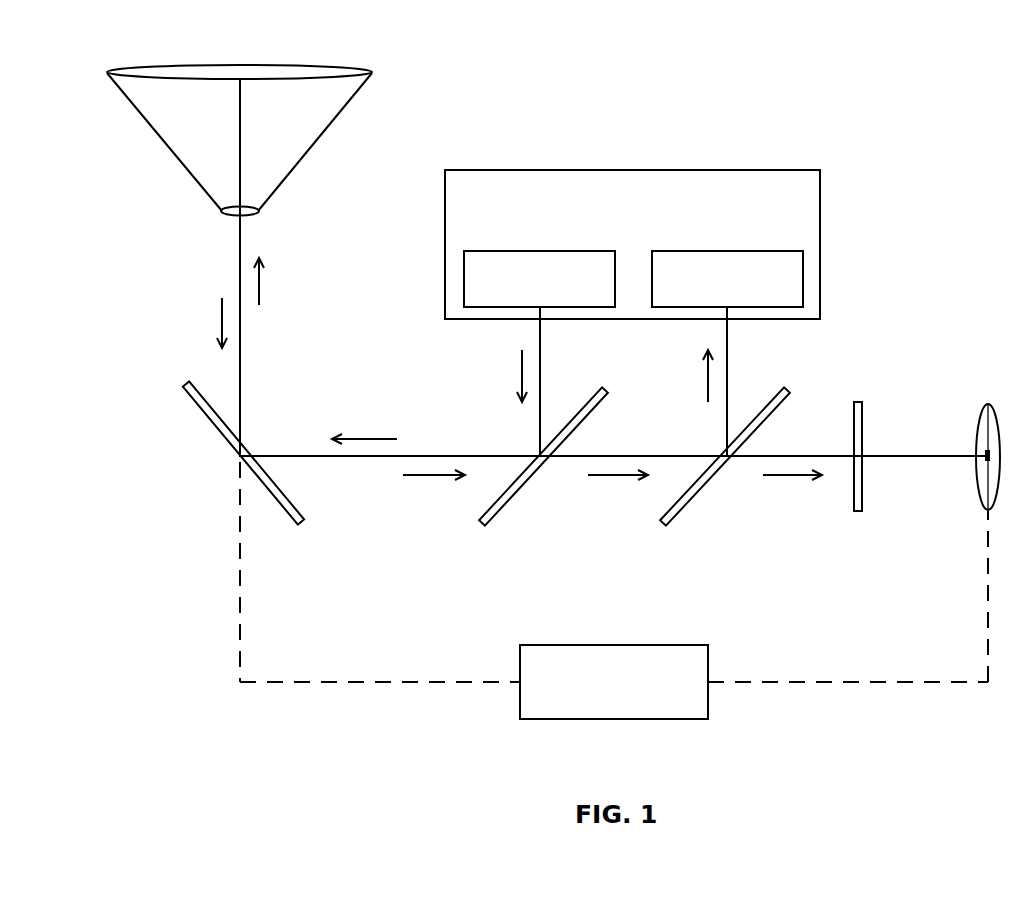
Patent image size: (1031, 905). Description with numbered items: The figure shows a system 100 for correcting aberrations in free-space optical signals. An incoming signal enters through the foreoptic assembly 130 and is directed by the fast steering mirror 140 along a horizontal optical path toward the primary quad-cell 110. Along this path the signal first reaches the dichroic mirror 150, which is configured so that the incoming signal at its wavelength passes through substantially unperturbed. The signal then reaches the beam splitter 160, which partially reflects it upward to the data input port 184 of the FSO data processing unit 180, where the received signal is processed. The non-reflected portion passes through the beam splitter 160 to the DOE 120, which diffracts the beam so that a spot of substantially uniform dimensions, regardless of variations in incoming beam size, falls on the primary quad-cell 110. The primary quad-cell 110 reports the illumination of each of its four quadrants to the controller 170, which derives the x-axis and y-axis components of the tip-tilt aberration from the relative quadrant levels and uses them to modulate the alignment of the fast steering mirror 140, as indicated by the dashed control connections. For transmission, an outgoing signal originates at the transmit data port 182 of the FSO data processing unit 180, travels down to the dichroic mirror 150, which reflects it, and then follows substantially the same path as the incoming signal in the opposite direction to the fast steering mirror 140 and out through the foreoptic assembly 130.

The system 100 is at (585, 286).
The primary quad-cell 110 is at (978, 492).
The DOE 120 is at (857, 512).
The foreoptic assembly 130 is at (153, 128).
The fast steering mirror 140 is at (212, 425).
The dichroic mirror 150 is at (482, 522).
The beam splitter 160 is at (663, 523).
The controller 170 is at (614, 590).
The FSO data processing unit 180 is at (632, 244).
The transmit data port 182 is at (539, 279).
The data input port 184 is at (727, 279).